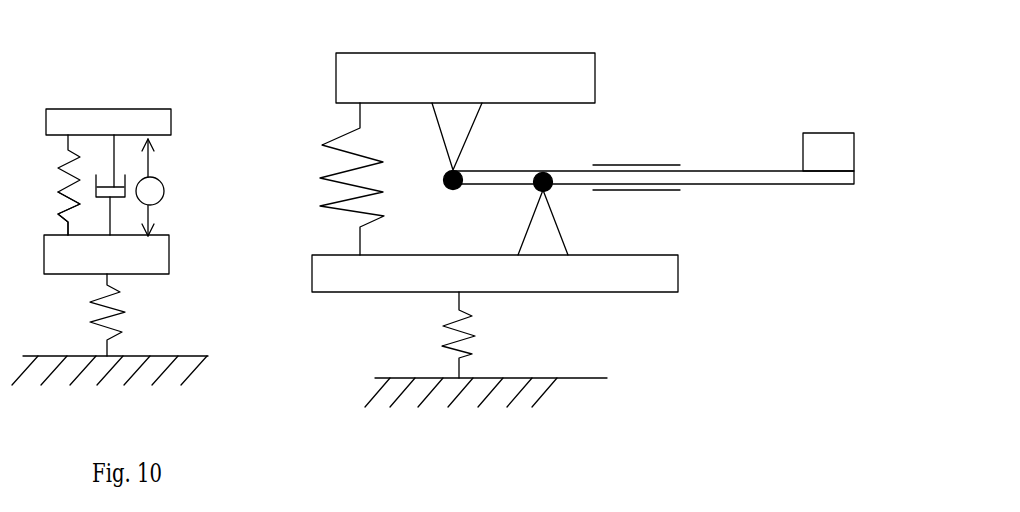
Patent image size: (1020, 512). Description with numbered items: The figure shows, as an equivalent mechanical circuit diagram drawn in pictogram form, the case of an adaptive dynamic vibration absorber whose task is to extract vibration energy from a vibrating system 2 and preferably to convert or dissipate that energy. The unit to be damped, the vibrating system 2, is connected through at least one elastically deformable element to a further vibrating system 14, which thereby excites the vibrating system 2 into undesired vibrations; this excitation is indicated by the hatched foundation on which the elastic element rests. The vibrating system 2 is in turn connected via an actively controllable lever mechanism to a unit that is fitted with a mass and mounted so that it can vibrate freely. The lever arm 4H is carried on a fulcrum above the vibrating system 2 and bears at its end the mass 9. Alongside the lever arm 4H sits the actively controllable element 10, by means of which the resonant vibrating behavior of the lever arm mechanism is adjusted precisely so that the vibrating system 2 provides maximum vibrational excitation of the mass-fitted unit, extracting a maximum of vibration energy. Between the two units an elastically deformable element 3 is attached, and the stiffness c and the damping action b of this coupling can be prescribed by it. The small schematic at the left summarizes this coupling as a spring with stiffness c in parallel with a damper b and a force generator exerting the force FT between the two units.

The stiffness of the elastically deformable element c is at (58, 185).
The damping action b is at (58, 213).
The force exerted by the force generator FT is at (167, 187).
The elastically deformable element 3 is at (313, 158).
The lever arm 4H is at (715, 190).
The actively controllable element 10 is at (645, 165).
The mass 9 is at (827, 133).
The vibrating system 2 is at (680, 282).
The vibrating system 14 is at (578, 397).